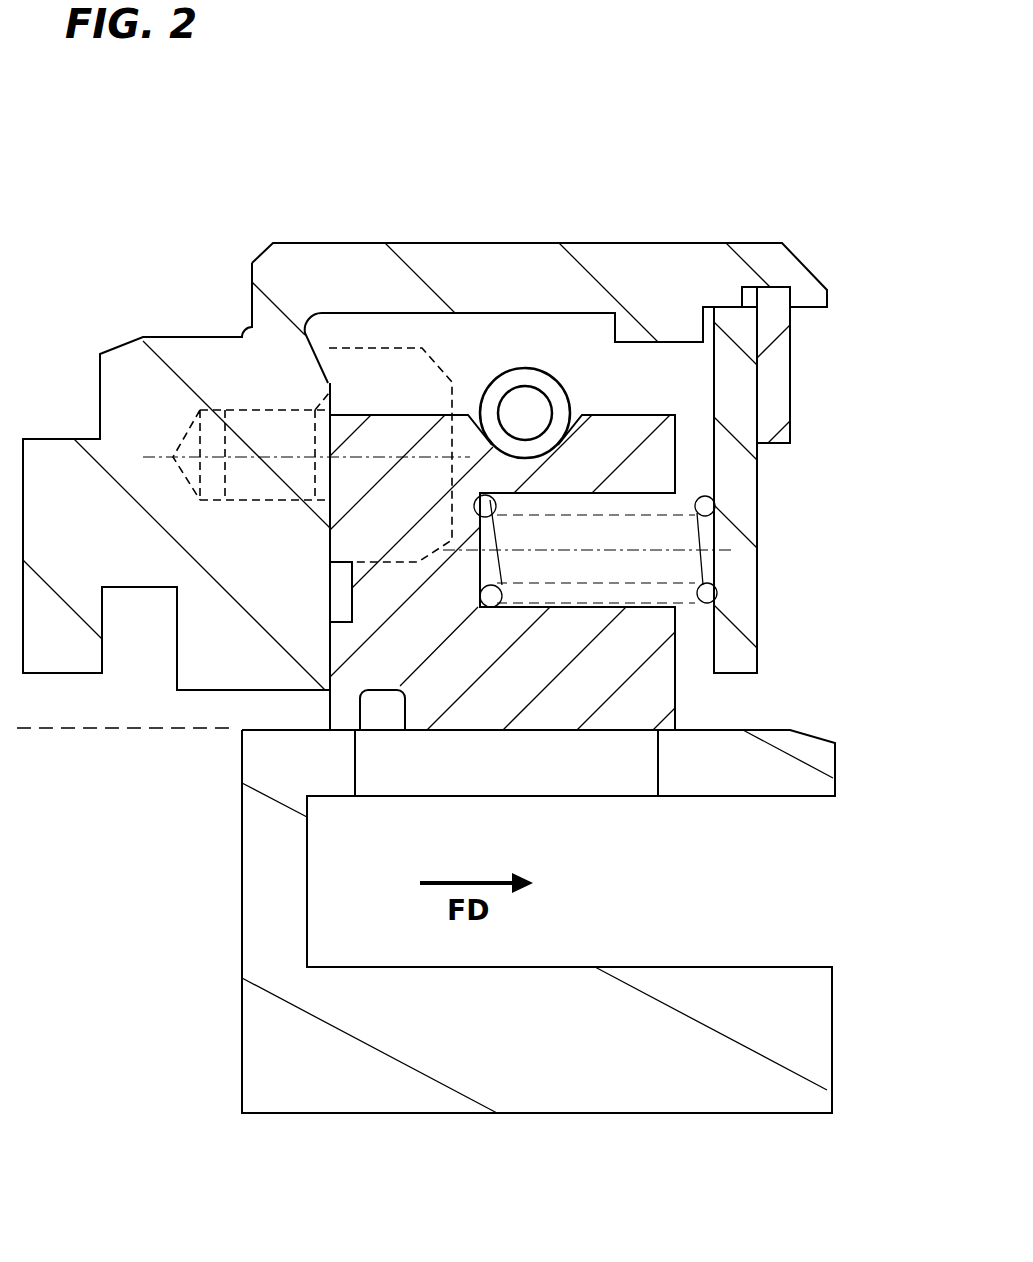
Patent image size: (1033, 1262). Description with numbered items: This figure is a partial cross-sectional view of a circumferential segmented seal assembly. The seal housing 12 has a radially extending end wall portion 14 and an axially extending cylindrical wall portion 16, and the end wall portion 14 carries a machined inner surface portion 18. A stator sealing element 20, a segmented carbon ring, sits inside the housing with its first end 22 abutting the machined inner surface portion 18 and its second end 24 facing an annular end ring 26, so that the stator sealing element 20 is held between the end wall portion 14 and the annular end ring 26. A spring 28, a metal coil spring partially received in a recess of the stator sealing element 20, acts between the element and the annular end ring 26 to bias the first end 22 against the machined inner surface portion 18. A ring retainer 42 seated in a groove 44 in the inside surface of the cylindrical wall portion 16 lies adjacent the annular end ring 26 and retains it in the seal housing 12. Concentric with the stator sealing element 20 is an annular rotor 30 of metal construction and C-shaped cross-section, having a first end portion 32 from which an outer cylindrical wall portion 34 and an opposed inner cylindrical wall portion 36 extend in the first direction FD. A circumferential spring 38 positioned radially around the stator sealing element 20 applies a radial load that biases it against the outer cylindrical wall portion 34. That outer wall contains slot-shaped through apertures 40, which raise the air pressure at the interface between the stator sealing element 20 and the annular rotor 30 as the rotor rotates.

The seal housing 12 is at (702, 242).
The radially extending end wall portion 14 is at (288, 574).
The axially extending cylindrical wall portion 16 is at (488, 284).
The machined inner surface portion 18 is at (330, 598).
The stator sealing element 20 is at (718, 698).
The first end 22 is at (330, 715).
The second end 24 is at (675, 718).
The annular end ring 26 is at (757, 598).
The spring 28 is at (705, 506).
The annular rotor 30 is at (163, 927).
The first end portion 32 is at (290, 907).
The outer cylindrical wall portion 34 is at (756, 774).
The inner cylindrical wall portion 36 is at (543, 1057).
The circumferential spring 38 is at (530, 367).
The through apertures 40 is at (518, 772).
The ring retainer 42 is at (790, 377).
The groove 44 is at (750, 298).